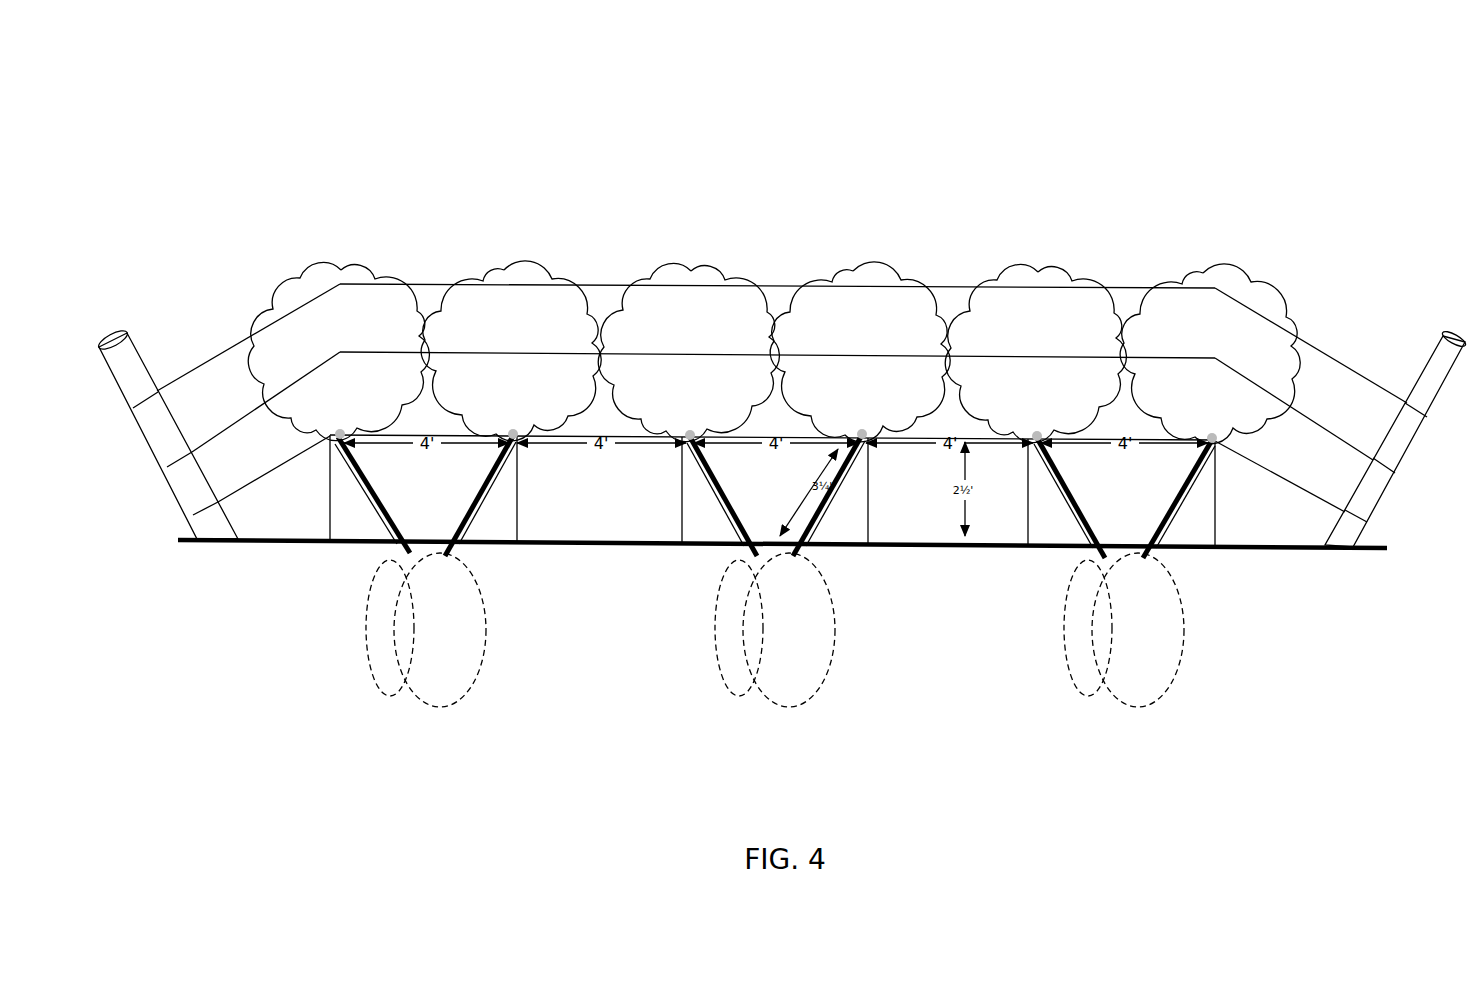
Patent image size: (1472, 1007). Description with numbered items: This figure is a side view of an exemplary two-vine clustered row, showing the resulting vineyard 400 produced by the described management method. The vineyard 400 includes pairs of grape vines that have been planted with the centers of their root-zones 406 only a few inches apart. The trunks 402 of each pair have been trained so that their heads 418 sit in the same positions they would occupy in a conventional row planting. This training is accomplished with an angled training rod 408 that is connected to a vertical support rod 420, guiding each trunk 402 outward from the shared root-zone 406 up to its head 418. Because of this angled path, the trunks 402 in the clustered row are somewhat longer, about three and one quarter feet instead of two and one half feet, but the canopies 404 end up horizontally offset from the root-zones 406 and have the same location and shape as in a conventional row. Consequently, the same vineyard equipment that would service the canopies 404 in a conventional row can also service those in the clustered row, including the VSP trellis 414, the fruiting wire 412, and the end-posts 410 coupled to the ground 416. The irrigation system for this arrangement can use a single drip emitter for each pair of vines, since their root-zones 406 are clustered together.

The vineyard 400 is at (886, 80).
The trunks 402 is at (486, 467).
The canopies 404 is at (813, 262).
The root-zones 406 is at (846, 678).
The angled training rod 408 is at (385, 530).
The end-posts 410 is at (1427, 345).
The fruiting wire 412 is at (285, 456).
The VSP trellis 414 is at (237, 417).
The ground 416 is at (782, 578).
The heads 418 is at (349, 424).
The vertical support rod 420 is at (328, 492).